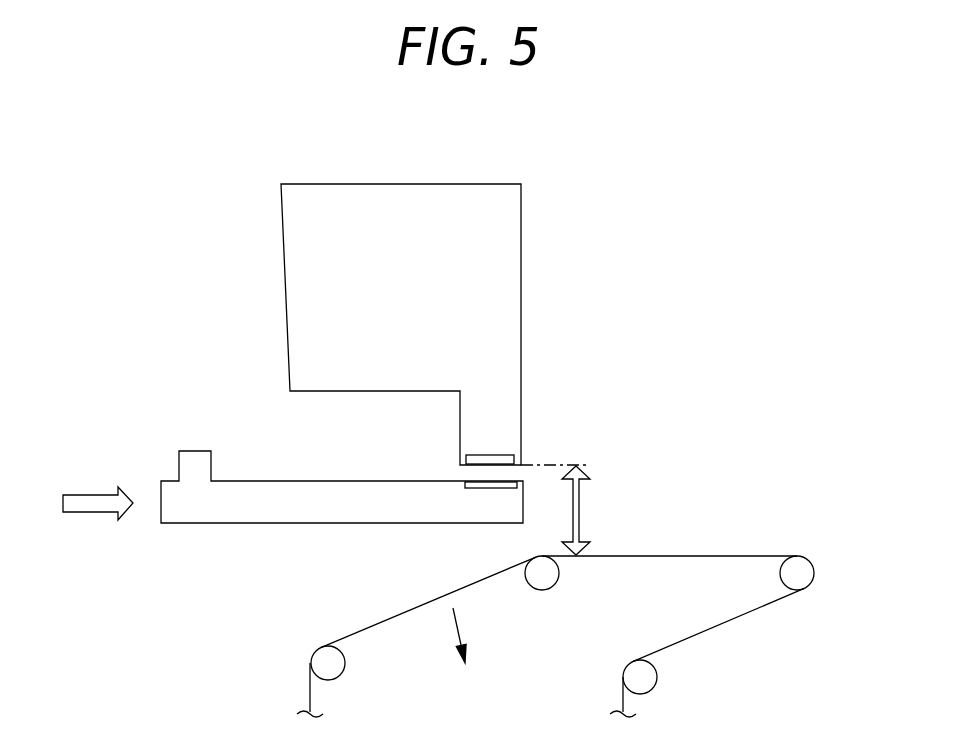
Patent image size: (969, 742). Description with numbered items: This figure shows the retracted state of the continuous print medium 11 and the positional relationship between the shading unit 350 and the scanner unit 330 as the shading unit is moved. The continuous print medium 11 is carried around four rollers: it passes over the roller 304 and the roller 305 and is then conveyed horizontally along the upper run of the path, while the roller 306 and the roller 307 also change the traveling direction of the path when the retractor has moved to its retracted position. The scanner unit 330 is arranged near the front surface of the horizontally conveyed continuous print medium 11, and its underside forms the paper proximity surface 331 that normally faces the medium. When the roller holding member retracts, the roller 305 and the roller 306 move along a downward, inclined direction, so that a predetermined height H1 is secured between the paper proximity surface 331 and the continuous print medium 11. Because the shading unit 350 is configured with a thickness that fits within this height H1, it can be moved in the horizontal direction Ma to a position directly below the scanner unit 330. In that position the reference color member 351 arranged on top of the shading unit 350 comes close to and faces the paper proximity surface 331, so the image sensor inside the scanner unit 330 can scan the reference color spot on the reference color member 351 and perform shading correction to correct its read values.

The scanner unit 330 is at (400, 184).
The paper proximity surface 331 is at (490, 460).
The shading unit 350 is at (196, 451).
The reference color member 351 is at (492, 488).
The continuous print medium 11 is at (730, 622).
The roller 304 is at (657, 677).
The roller 305 is at (814, 573).
The roller 306 is at (559, 575).
The roller 307 is at (345, 663).
The horizontal direction Ma is at (90, 497).
The predetermined height H1 is at (583, 508).